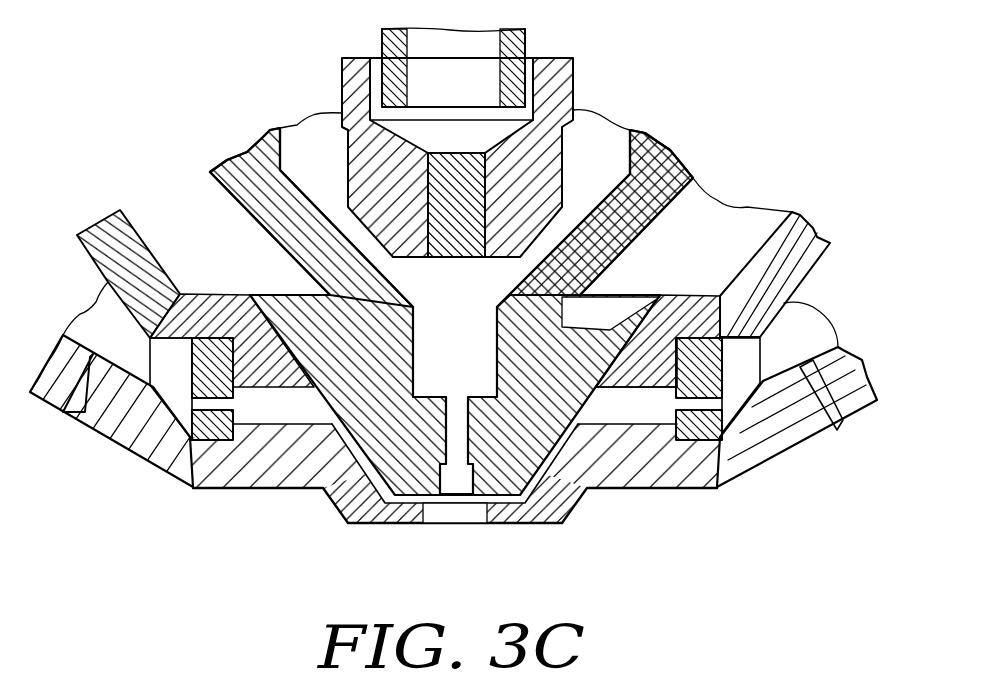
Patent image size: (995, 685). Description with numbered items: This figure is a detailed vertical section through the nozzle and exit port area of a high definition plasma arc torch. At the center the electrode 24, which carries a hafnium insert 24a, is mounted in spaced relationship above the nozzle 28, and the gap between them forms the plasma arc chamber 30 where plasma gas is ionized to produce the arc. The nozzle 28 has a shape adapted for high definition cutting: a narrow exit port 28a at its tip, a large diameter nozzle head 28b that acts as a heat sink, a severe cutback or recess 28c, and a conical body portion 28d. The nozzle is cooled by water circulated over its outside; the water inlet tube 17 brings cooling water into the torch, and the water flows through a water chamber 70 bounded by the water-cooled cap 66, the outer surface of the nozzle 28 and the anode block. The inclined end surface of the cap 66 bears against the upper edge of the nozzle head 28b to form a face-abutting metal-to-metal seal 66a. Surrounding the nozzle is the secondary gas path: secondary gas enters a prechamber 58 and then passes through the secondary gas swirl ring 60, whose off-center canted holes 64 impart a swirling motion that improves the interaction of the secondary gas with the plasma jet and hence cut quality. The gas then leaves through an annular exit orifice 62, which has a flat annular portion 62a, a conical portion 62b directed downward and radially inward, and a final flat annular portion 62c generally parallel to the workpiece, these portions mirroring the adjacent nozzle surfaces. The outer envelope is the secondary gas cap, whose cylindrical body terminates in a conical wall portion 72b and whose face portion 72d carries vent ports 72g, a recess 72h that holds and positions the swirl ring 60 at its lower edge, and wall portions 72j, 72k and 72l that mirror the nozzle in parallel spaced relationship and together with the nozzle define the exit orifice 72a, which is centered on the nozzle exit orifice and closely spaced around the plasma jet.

The water inlet tube 17 is at (523, 40).
The electrode 24 is at (573, 80).
The hafnium insert 24a is at (455, 243).
The nozzle 28 is at (656, 143).
The exit port 28a is at (460, 468).
The nozzle head 28b is at (307, 330).
The cutback or recess 28c is at (636, 270).
The conical body portion 28d is at (210, 190).
The plasma arc chamber 30 is at (604, 174).
The prechamber 58 is at (800, 330).
The secondary gas swirl ring 60 is at (203, 370).
The annular exit orifice 62 is at (568, 500).
The flat annular portion 62a is at (650, 414).
The conical portion 62b is at (353, 513).
The final flat annular portion 62c is at (502, 500).
The canted holes 64 is at (718, 404).
The water-cooled cap 66 is at (822, 265).
The metal-to-metal seal 66a is at (600, 308).
The water chamber 70 is at (712, 200).
The exit orifice 72a is at (467, 530).
The conical wall portion 72b is at (782, 440).
The face portion 72d is at (858, 362).
The vent ports 72g is at (72, 412).
The recess 72h is at (180, 480).
The wall portion 72j is at (245, 490).
The wall portion 72k is at (330, 498).
The wall portion 72l is at (395, 525).